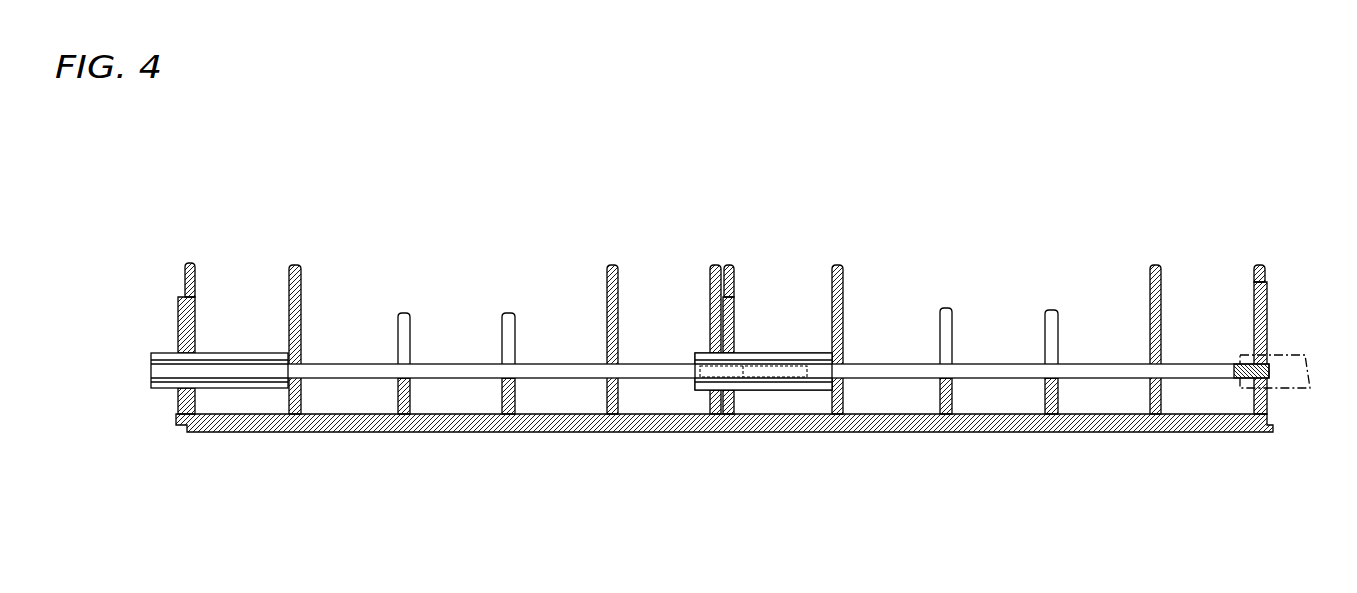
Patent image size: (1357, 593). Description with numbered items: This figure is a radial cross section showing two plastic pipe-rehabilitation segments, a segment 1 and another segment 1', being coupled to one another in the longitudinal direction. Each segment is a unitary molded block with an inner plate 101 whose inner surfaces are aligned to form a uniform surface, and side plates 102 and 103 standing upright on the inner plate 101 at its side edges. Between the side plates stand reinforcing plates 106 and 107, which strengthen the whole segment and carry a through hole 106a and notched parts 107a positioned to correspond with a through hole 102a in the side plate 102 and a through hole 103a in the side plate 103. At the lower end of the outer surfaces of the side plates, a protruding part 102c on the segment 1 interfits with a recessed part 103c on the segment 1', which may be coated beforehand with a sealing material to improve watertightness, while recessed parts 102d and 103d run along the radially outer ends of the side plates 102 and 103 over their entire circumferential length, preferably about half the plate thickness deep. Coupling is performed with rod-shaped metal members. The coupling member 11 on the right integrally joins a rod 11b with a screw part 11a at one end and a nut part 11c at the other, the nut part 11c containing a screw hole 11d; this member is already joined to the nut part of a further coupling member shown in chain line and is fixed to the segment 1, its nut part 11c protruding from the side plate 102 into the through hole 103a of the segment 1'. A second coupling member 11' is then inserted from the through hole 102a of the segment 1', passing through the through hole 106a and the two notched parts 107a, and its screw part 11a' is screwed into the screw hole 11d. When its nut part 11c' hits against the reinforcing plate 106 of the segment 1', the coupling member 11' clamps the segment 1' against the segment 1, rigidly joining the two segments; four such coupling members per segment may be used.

The segment 1 is at (1035, 501).
The segment 1' is at (350, 504).
The coupling member 11 is at (984, 290).
The coupling member 11' is at (429, 285).
The screw part 11a is at (1238, 335).
The screw part 11a' is at (677, 310).
The rod 11b is at (875, 363).
The nut part 11c is at (1004, 333).
The nut part 11c' is at (219, 335).
The screw hole 11d is at (777, 368).
The inner plate 101 is at (492, 433).
The side plate 102 is at (444, 351).
The through hole 102a is at (178, 393).
The protruding part 102c is at (720, 425).
The recessed part 102d is at (179, 297).
The side plate 103 is at (975, 339).
The through hole 103a is at (707, 392).
The recessed part 103c is at (717, 425).
The recessed part 103d is at (1267, 282).
The reinforcing plate 106 is at (298, 264).
The through hole 106a is at (302, 364).
The reinforcing plate 107 is at (744, 329).
The notched part 107a is at (403, 363).